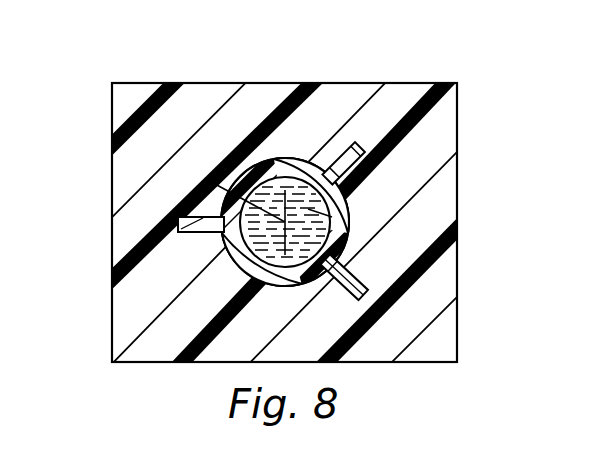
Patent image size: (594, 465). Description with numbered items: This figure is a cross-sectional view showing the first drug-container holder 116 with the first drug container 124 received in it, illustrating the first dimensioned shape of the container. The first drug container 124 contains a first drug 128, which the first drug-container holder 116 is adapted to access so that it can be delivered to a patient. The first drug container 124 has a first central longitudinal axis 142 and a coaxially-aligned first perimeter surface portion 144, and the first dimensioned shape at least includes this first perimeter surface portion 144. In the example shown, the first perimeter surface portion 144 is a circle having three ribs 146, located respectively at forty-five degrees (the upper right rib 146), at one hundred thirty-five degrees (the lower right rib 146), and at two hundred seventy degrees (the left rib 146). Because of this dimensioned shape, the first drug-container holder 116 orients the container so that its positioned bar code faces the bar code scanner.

The first drug-container holder 116 is at (113, 338).
The first drug container 124 is at (288, 157).
The first drug 128 is at (350, 229).
The first central longitudinal axis 142 is at (215, 184).
The first perimeter surface portion 144 is at (343, 208).
The ribs 146 is at (366, 143).